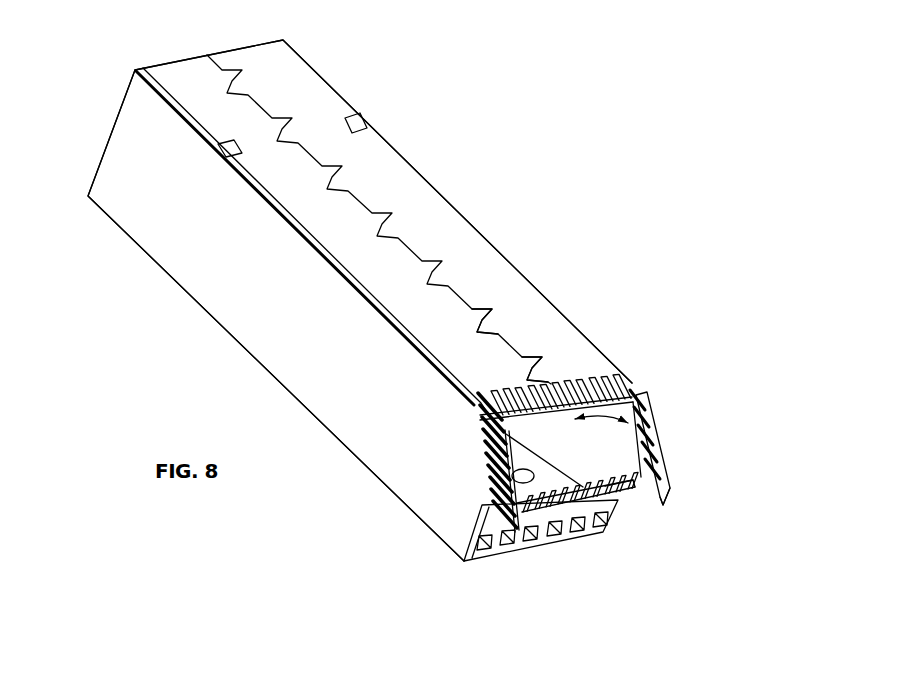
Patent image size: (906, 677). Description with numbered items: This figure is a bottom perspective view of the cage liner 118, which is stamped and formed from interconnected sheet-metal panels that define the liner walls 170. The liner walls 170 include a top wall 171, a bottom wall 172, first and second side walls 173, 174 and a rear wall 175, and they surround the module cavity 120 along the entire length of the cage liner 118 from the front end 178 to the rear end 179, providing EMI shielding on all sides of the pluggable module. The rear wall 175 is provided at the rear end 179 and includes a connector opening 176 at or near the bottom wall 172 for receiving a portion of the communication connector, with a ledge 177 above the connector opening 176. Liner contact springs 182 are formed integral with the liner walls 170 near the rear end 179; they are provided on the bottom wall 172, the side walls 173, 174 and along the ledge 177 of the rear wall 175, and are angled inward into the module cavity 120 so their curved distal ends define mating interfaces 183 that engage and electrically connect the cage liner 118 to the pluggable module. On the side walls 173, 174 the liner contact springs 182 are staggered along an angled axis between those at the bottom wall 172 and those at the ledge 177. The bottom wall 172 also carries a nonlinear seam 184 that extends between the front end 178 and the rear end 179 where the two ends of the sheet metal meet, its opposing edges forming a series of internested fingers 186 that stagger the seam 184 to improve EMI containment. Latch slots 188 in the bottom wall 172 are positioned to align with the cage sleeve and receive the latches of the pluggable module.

The cage liner 118 is at (550, 178).
The module cavity 120 is at (645, 397).
The liner walls 170 is at (392, 185).
The top wall 171 is at (535, 465).
The bottom wall 172 is at (585, 363).
The first side wall 173 is at (648, 448).
The second side wall 174 is at (418, 457).
The rear wall 175 is at (538, 540).
The connector opening 176 is at (636, 420).
The ledge 177 is at (612, 530).
The front end 178 is at (106, 144).
The rear end 179 is at (665, 497).
The liner contact springs 182 is at (603, 381).
The mating interfaces 183 is at (640, 503).
The seam 184 is at (463, 297).
The fingers 186 is at (492, 312).
The latch slots 188 is at (233, 150).